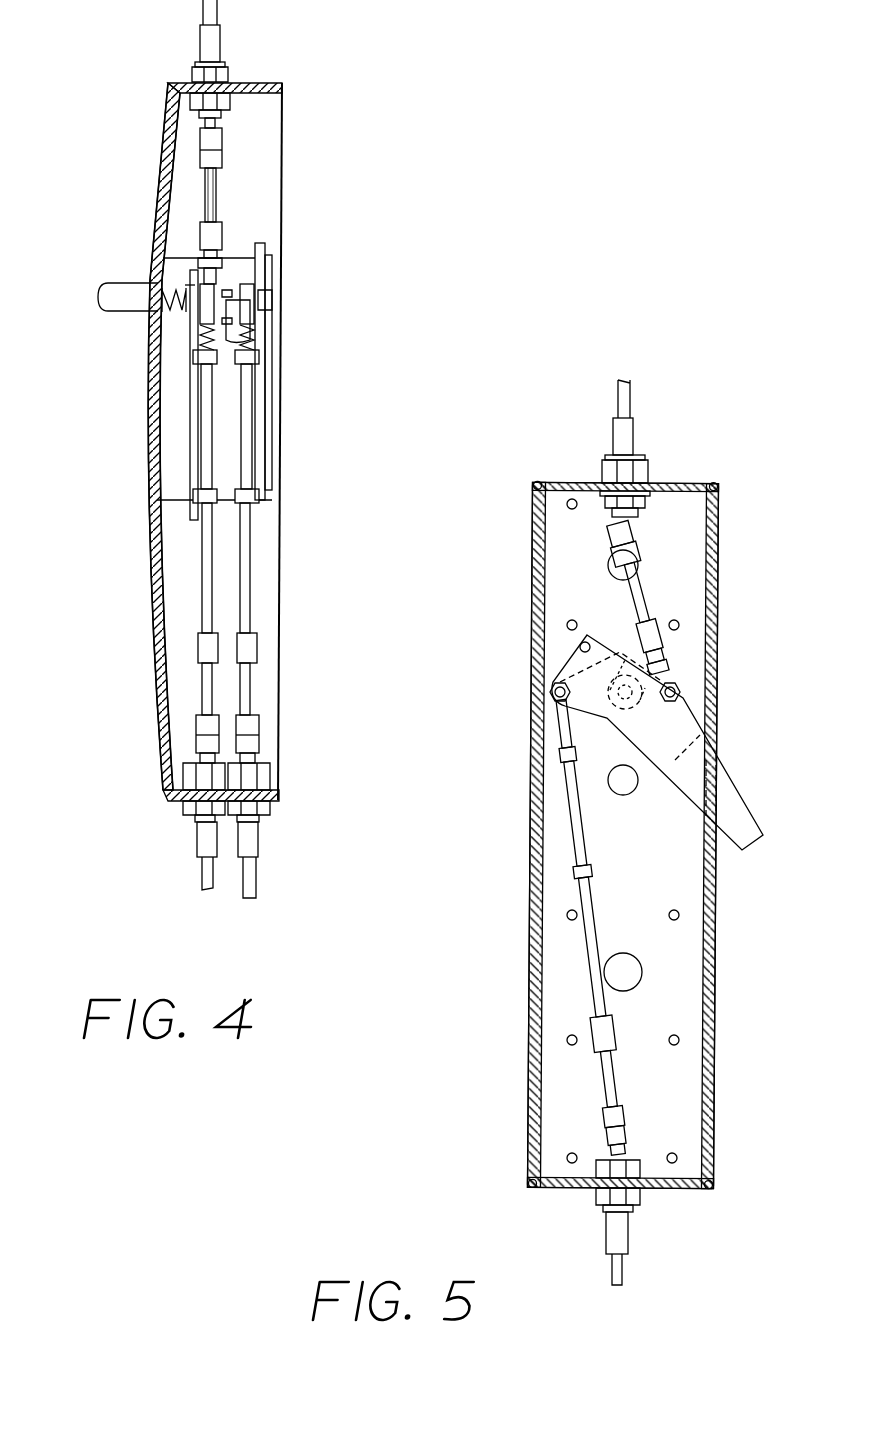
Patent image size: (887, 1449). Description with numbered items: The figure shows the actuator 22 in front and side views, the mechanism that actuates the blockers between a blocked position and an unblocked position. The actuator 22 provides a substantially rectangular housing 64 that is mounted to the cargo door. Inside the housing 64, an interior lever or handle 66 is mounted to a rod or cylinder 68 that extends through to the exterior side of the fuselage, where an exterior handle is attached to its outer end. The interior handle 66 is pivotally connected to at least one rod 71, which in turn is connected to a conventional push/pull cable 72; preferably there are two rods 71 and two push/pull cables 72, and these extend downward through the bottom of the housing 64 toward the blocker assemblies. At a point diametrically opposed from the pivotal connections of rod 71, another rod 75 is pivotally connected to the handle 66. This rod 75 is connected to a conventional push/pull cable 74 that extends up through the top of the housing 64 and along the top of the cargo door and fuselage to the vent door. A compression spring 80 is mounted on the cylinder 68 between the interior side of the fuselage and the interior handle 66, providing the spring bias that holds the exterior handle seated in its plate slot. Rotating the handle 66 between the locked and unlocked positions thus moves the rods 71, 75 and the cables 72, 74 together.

In FIG. 4, the actuator 22 is at (335, 305).
In FIG. 5, the actuator 22 is at (763, 612).
In FIG. 4, the housing 64 is at (156, 713).
In FIG. 5, the housing 64 is at (718, 532).
In FIG. 4, the interior lever or handle 66 is at (255, 412).
In FIG. 5, the interior lever or handle 66 is at (718, 775).
In FIG. 4, the rod or cylinder 68 is at (115, 290).
In FIG. 4, the rod 71 is at (205, 552).
In FIG. 5, the rod 71 is at (575, 845).
In FIG. 4, the push/pull cable 72 is at (200, 870).
In FIG. 5, the push/pull cable 72 is at (606, 1262).
In FIG. 4, the push/pull cable 74 is at (218, 15).
In FIG. 5, the push/pull cable 74 is at (632, 393).
In FIG. 4, the rod 75 is at (215, 200).
In FIG. 5, the rod 75 is at (640, 594).
In FIG. 4, the compression spring 80 is at (182, 287).